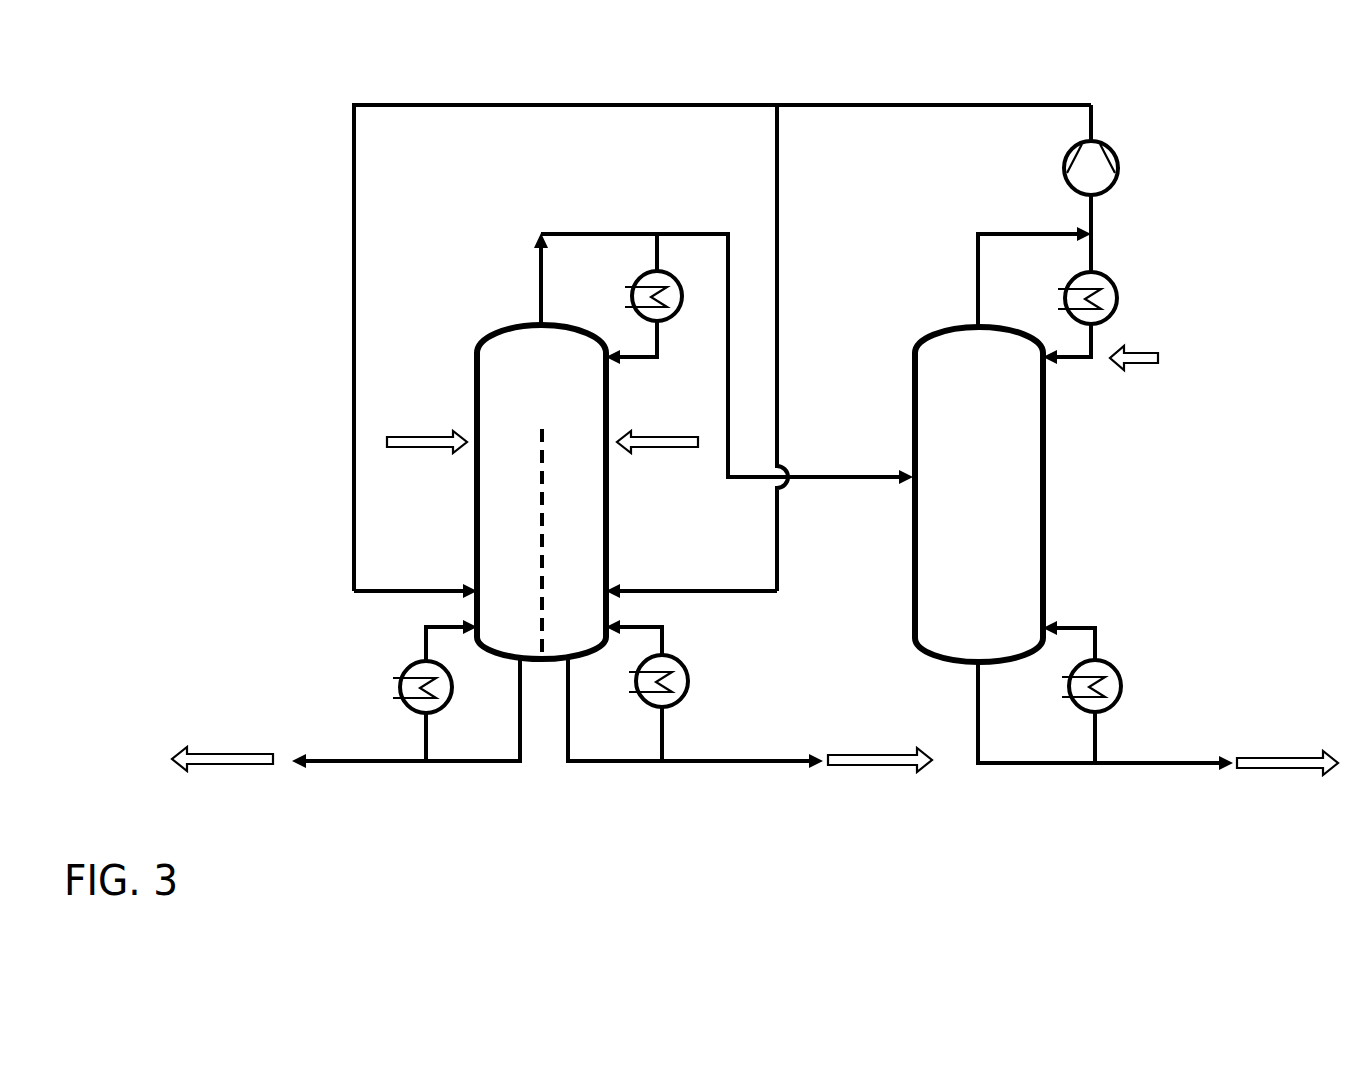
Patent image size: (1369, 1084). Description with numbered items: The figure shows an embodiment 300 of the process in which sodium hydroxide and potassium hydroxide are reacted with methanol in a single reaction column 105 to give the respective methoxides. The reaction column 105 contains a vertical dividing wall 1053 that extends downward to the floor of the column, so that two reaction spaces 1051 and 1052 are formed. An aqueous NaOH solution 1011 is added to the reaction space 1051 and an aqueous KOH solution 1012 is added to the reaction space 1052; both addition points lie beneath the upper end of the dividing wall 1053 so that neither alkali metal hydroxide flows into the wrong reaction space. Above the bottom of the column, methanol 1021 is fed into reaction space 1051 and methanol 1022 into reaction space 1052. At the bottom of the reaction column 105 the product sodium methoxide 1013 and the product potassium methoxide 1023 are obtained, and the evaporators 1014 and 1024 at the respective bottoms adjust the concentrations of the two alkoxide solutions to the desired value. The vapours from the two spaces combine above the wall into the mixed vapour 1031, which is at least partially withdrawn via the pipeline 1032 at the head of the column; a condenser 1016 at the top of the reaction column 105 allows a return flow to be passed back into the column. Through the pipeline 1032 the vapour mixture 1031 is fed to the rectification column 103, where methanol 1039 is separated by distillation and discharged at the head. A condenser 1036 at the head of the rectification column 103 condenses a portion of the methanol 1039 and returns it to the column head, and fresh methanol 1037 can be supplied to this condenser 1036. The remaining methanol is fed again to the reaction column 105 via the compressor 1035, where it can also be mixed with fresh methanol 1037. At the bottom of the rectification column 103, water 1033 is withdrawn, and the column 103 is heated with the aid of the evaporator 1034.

The embodiment 300 is at (323, 427).
The reaction column 105 is at (468, 376).
The mixed vapour B_M 1031 is at (540, 402).
The reaction space 1051 is at (508, 538).
The reaction space 1052 is at (577, 538).
The dividing wall 1053 is at (543, 672).
The aqueous NaOH solution 1011 is at (424, 428).
The aqueous KOH solution 1012 is at (661, 428).
The methanol 1021 is at (415, 579).
The methanol 1022 is at (691, 579).
The pipeline 1032 is at (527, 265).
The condenser 1016 is at (618, 302).
The evaporator 1014 is at (382, 683).
The evaporator 1024 is at (705, 679).
The sodium methoxide 1013 is at (346, 714).
The potassium methoxide 1023 is at (750, 714).
The rectification column 103 is at (893, 359).
The methanol 1039 is at (960, 273).
The compressor 1035 is at (1133, 171).
The condenser 1036 is at (1138, 299).
The fresh methanol 1037 is at (1190, 355).
The evaporator 1034 is at (1138, 680).
The water 1033 is at (1158, 717).